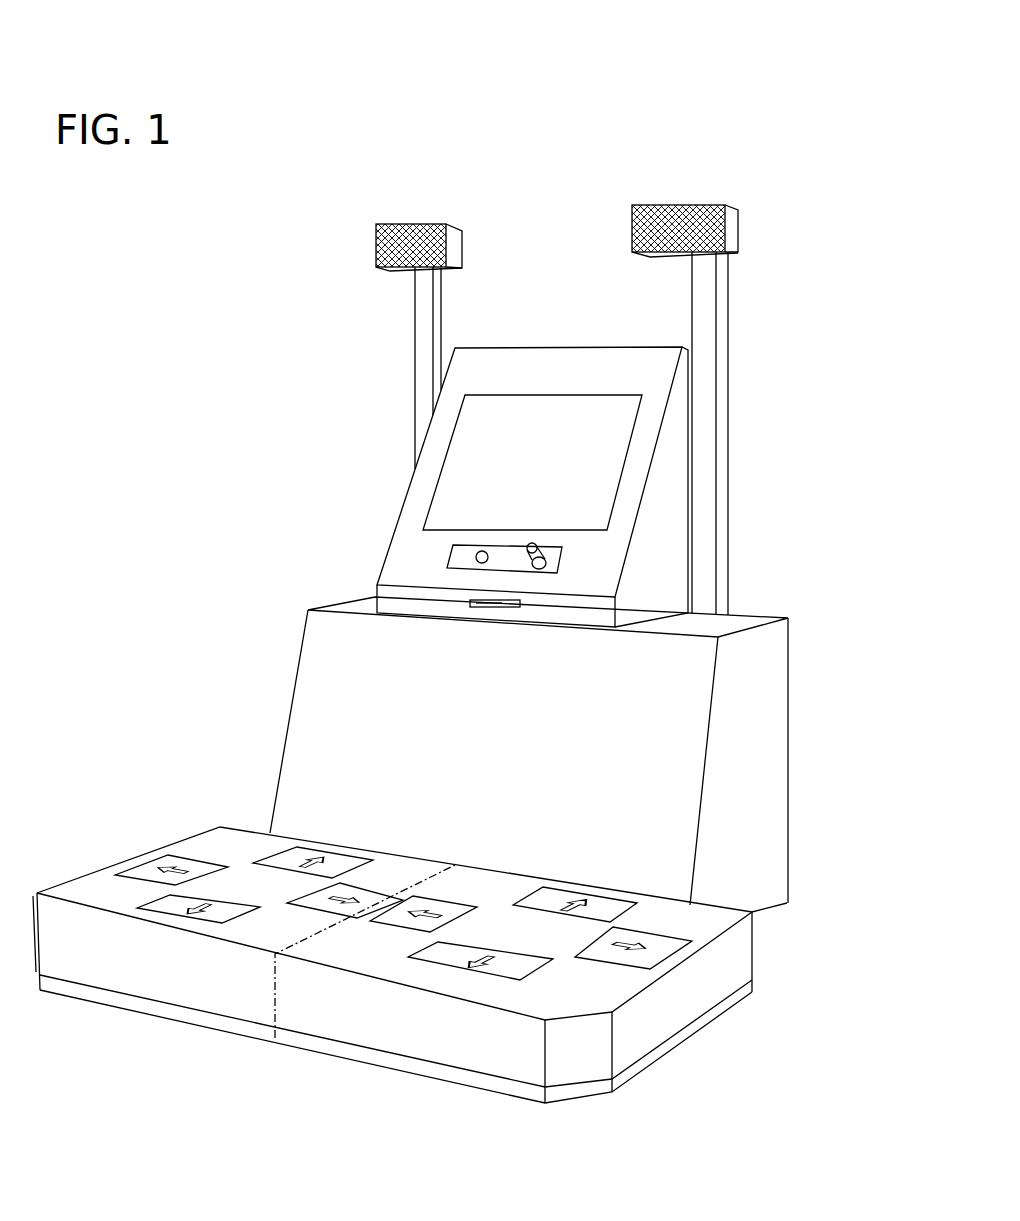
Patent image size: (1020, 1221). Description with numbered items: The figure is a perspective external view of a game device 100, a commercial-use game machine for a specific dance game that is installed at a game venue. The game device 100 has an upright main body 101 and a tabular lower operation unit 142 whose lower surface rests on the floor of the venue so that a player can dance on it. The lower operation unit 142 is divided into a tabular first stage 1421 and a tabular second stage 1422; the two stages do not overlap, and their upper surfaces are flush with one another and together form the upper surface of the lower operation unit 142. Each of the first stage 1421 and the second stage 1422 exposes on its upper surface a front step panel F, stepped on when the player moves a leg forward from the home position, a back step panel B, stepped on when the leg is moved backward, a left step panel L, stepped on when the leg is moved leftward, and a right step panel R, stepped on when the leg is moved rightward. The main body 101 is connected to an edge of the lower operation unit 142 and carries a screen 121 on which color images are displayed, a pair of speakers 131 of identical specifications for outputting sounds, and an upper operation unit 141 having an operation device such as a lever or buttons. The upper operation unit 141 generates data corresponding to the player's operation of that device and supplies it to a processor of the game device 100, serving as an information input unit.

The game device 100 is at (747, 166).
The main body 101 is at (740, 763).
The screen 121 is at (496, 428).
The speakers 131 is at (412, 248).
The upper operation unit 141 is at (560, 557).
The lower operation unit 142 is at (732, 948).
The first stage 1421 is at (158, 978).
The second stage 1422 is at (430, 1020).
The left step panel L is at (168, 857).
The front step panel F is at (288, 860).
The back step panel B is at (158, 903).
The right step panel R is at (300, 891).